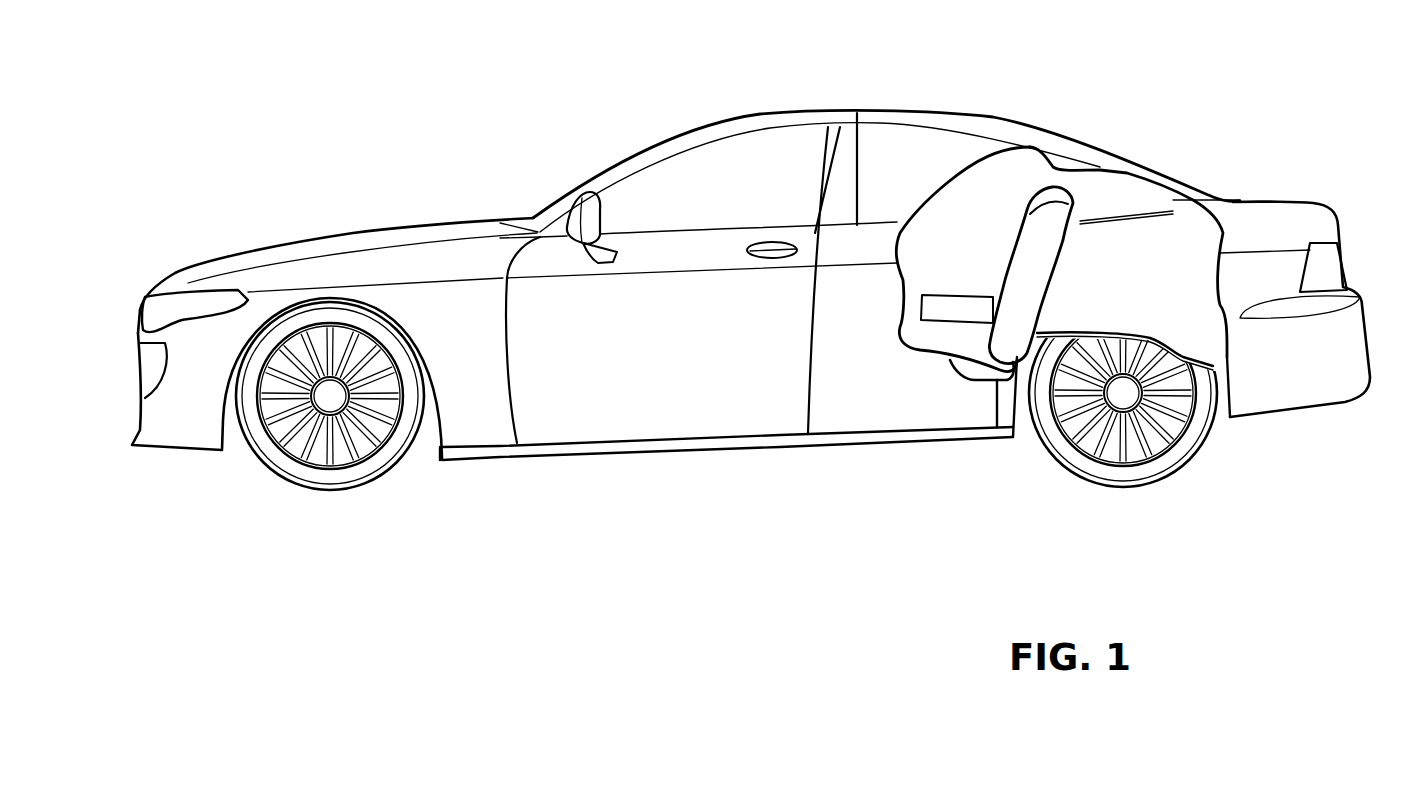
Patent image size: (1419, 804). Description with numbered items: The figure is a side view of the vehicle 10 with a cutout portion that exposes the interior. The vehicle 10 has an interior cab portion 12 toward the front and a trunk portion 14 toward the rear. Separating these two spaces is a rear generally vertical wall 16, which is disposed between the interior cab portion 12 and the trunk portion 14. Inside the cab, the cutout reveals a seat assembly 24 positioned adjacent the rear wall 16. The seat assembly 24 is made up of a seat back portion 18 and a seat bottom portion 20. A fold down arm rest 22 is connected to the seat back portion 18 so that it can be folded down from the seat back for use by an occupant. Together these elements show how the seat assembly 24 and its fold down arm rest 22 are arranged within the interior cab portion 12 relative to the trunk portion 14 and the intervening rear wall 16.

The vehicle 10 is at (530, 191).
The interior cab portion 12 is at (1013, 177).
The trunk portion 14 is at (1183, 250).
The rear generally vertical wall 16 is at (1070, 248).
The seat back portion 18 is at (1027, 291).
The seat bottom portion 20 is at (982, 373).
The fold down arm rest 22 is at (948, 307).
The seat assembly 24 is at (980, 272).